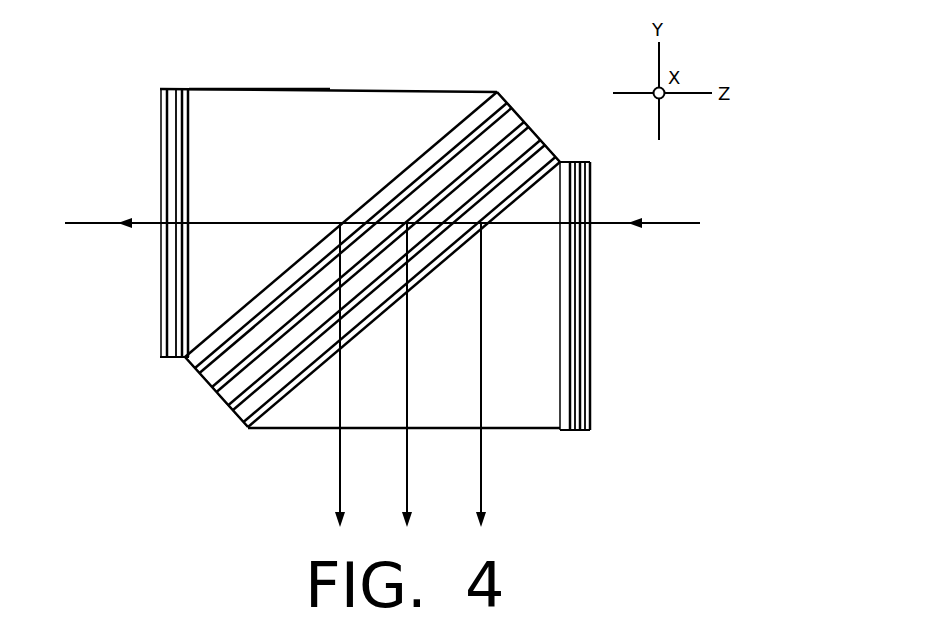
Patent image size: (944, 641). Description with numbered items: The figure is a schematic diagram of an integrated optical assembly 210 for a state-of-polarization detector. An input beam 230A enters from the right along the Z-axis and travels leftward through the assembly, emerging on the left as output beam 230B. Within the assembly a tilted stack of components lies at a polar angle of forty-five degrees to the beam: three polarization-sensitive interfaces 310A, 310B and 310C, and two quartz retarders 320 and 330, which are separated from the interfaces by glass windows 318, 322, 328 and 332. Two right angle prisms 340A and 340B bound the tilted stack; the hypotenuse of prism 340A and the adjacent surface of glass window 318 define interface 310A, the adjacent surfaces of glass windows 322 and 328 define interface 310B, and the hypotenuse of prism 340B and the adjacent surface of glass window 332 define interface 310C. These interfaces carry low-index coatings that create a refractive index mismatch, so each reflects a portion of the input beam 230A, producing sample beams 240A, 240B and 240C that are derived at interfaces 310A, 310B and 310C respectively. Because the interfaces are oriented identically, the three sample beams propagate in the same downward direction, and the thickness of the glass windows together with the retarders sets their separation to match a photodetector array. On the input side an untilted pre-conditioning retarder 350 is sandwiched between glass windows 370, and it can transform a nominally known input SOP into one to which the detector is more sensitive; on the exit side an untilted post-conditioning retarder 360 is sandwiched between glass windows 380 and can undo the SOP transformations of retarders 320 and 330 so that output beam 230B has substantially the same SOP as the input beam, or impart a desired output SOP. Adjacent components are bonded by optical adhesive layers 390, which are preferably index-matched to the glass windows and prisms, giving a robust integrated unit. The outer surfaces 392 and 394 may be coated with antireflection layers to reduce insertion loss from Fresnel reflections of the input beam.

The integrated optical assembly 210 is at (82, 375).
The input beam 230A is at (665, 216).
The output beam 230B is at (98, 228).
The sample beam 240A is at (482, 466).
The sample beam 240B is at (406, 465).
The sample beam 240C is at (339, 468).
The polarization-sensitive interface 310A is at (558, 160).
The polarization-sensitive interface 310B is at (528, 131).
The polarization-sensitive interface 310C is at (467, 117).
The glass window 318 is at (529, 181).
The quartz retarder 320 is at (233, 410).
The glass window 322 is at (475, 182).
The glass window 328 is at (421, 207).
The quartz retarder 330 is at (200, 367).
The glass window 332 is at (407, 180).
The right angle prism 340A is at (552, 351).
The right angle prism 340B is at (272, 138).
The pre-conditioning retarder 350 is at (583, 338).
The post-conditioning retarder 360 is at (167, 130).
The glass windows 370 is at (582, 375).
The glass windows 380 is at (180, 160).
The optical adhesive layers 390 is at (511, 106).
The surface 392 is at (590, 264).
The surface 394 is at (160, 97).